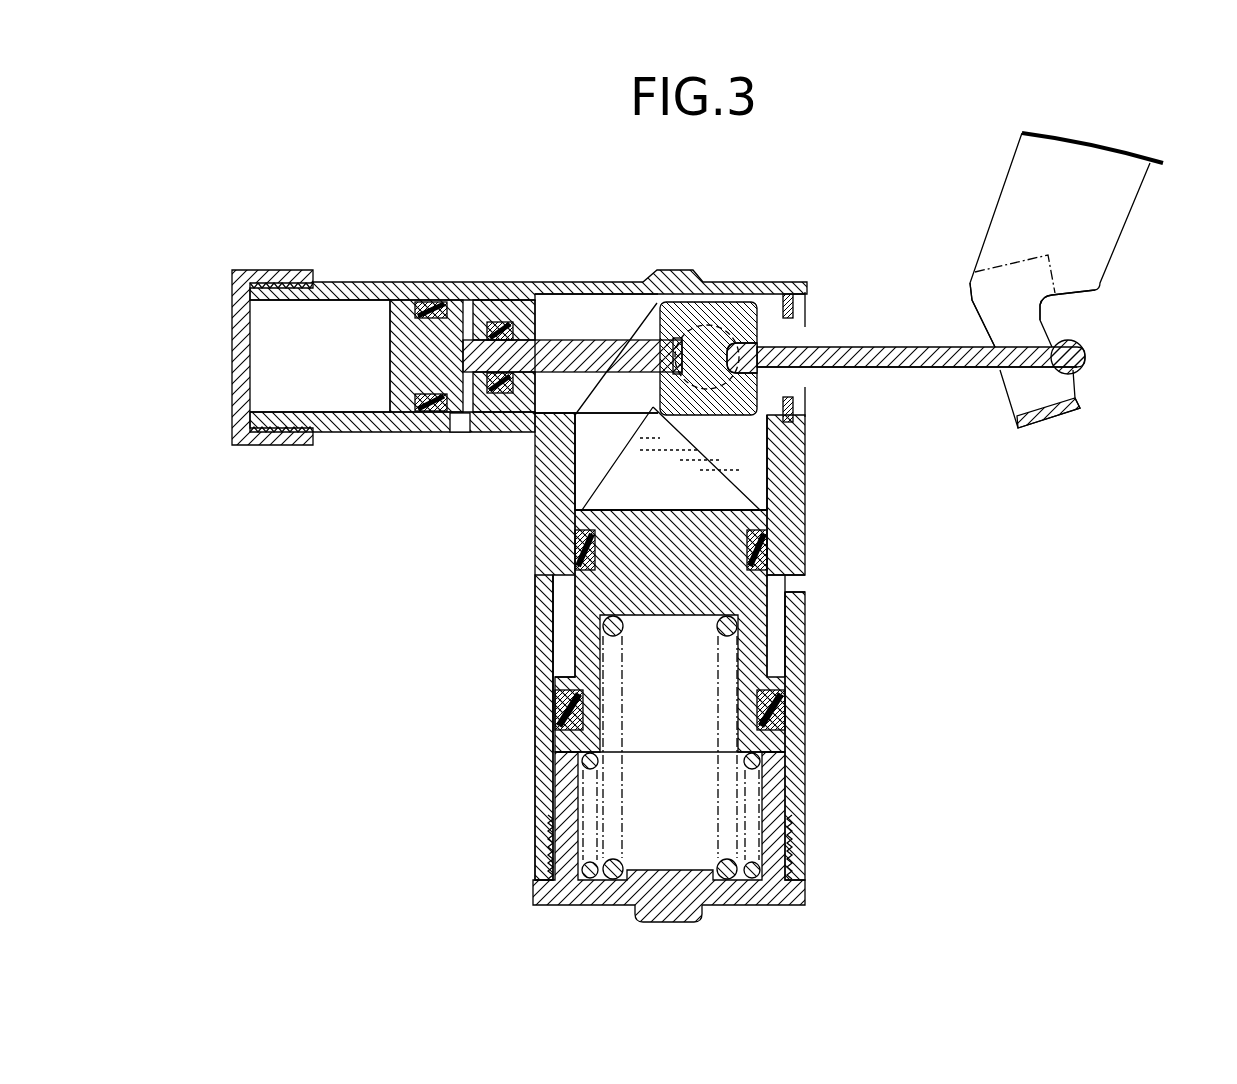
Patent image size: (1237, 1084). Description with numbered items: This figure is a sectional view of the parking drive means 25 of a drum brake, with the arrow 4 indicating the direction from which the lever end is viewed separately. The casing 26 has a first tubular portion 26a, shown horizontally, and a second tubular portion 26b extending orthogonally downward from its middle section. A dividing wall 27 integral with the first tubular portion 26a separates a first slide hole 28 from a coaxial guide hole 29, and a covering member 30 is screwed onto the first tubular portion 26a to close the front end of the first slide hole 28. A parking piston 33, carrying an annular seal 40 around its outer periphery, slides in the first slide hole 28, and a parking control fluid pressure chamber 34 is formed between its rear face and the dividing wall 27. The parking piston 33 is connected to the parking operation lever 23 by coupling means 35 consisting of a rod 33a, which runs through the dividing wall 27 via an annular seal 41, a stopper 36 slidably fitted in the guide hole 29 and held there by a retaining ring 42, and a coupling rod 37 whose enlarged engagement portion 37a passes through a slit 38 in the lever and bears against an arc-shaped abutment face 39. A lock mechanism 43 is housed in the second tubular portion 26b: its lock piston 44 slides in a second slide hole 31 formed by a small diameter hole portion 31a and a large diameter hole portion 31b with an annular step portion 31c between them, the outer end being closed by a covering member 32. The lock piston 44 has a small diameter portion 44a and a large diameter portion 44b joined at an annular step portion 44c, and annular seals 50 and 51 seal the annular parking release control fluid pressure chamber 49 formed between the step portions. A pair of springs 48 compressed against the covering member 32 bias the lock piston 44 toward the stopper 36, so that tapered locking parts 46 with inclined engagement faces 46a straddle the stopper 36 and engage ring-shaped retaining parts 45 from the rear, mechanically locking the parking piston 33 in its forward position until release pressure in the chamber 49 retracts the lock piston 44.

The arrow 4 is at (1112, 355).
The parking operation lever 23 is at (1017, 178).
The parking drive means 25 is at (528, 535).
The casing 26 is at (528, 575).
The first tubular portion 26a is at (507, 417).
The second tubular portion 26b is at (501, 727).
The dividing wall 27 is at (568, 303).
The first slide hole 28 is at (332, 317).
The guide hole 29 is at (558, 305).
The covering member 30 is at (243, 412).
The second slide hole 31 is at (757, 480).
The small diameter hole portion 31a is at (762, 462).
The large diameter hole portion 31b is at (790, 665).
The annular step portion 31c is at (778, 582).
The covering member 32 is at (540, 893).
The parking piston 33 is at (390, 393).
The rod 33a is at (592, 348).
The parking control fluid pressure chamber 34 is at (462, 300).
The coupling means 35 is at (955, 378).
The stopper 36 is at (738, 302).
The coupling rod 37 is at (922, 350).
The enlarged engagement portion 37a is at (1080, 373).
The slit 38 is at (1007, 317).
The abutment face 39 is at (1043, 327).
The annular seal 40 is at (433, 410).
The annular seal 41 is at (496, 320).
The retaining ring 42 is at (806, 300).
The lock mechanism 43 is at (763, 318).
The lock piston 44 is at (671, 645).
The small diameter portion 44a is at (774, 526).
The large diameter portion 44b is at (790, 735).
The annular step portion 44c is at (575, 677).
The retaining part 45 is at (683, 285).
The locking part 46 is at (700, 442).
The engagement face 46a is at (600, 466).
The spring 48 is at (593, 873).
The parking release control fluid pressure chamber 49 is at (778, 662).
The annular seal 50 is at (770, 560).
The annular seal 51 is at (568, 712).